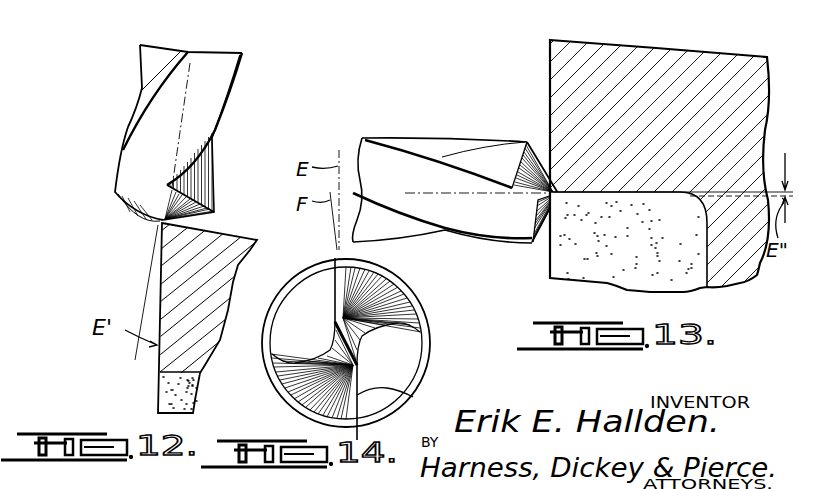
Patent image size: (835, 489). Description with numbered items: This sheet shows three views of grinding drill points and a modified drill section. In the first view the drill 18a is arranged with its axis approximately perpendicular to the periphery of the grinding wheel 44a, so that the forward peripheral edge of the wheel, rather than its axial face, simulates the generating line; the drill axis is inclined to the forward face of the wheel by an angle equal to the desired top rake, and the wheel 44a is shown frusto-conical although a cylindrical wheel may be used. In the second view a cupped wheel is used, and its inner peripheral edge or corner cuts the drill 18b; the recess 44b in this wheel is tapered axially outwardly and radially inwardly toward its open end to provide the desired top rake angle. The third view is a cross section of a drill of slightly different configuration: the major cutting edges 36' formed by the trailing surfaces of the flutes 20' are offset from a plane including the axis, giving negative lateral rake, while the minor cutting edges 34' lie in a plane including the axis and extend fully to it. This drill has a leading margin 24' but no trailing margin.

In FIG. 12, the drill 18a is at (252, 85).
In FIG. 12, the grinding wheel 44a is at (160, 283).
In FIG. 13, the drill 18b is at (438, 141).
In FIG. 13, the recess in the grinding wheel 44b is at (617, 43).
In FIG. 14, the flutes 20' is at (373, 340).
In FIG. 14, the leading margin 24' is at (387, 343).
In FIG. 14, the minor cutting edges 34' is at (346, 359).
In FIG. 14, the major cutting edges 36' is at (361, 343).